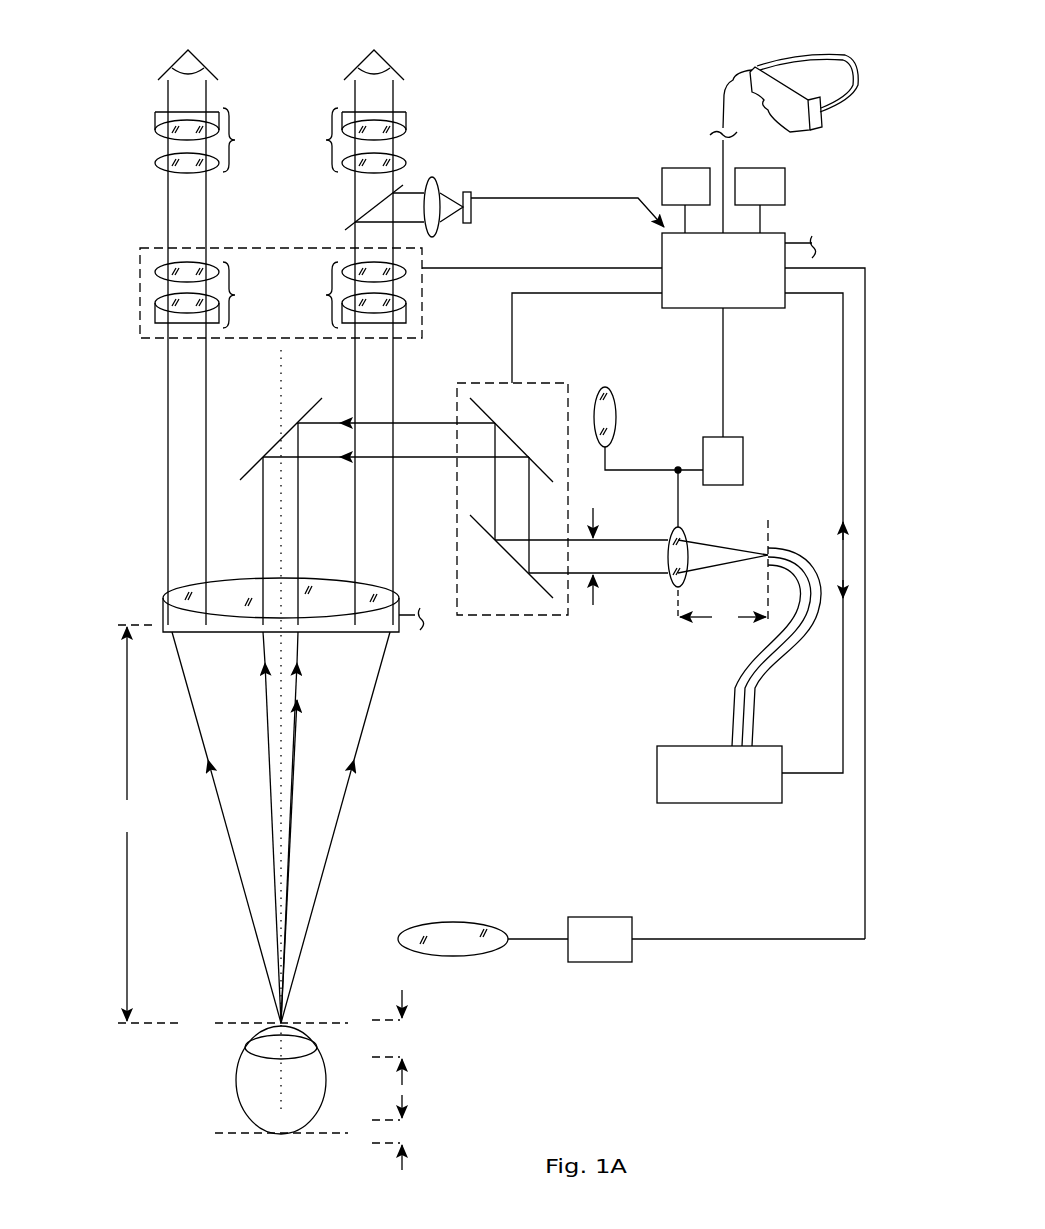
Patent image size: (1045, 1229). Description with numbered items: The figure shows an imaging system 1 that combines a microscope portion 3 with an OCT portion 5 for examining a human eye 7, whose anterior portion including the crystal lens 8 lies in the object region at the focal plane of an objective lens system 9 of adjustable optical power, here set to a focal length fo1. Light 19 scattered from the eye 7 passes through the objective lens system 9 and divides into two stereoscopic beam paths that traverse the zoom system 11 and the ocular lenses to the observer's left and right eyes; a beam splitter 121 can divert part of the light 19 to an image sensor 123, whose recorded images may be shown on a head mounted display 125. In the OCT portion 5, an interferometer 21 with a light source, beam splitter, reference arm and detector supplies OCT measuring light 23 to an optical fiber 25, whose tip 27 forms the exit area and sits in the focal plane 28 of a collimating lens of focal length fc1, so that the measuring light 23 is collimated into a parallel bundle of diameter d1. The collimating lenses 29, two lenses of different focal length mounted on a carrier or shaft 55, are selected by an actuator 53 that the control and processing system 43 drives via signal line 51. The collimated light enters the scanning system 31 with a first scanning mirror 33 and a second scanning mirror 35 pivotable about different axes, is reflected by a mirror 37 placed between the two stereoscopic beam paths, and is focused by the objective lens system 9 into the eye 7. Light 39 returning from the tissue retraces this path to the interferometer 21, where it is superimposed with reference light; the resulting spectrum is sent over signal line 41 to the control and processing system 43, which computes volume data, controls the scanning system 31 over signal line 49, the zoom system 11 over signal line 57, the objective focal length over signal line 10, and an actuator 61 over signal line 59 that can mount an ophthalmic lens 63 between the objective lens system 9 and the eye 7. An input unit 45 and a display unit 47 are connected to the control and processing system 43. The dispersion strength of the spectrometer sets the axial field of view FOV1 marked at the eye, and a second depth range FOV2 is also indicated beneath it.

The imaging system 1 is at (592, 96).
The microscope portion 3 is at (160, 505).
The OCT portion 5 is at (610, 702).
The human eye 7 is at (200, 1070).
The crystal lens 8 is at (306, 1047).
The objective lens system 9 is at (163, 612).
The signal line 10 is at (800, 243).
The zoom system 11 is at (142, 248).
The light 19 is at (206, 383).
The interferometer 21 is at (705, 803).
The OCT measuring light 23 is at (332, 418).
The optical fiber 25 is at (785, 665).
The tip 27 is at (765, 548).
The focal plane 28 is at (775, 525).
The collimating lenses 29 is at (665, 372).
The scanning system 31 is at (510, 615).
The first scanning mirror 33 is at (478, 530).
The second scanning mirror 35 is at (543, 468).
The mirror 37 is at (256, 463).
The light 39 is at (262, 662).
The signal line 41 is at (812, 773).
The control and processing system 43 is at (662, 248).
The input unit 45 is at (662, 180).
The display unit 47 is at (785, 180).
The signal line 49 is at (575, 293).
The signal line 51 is at (723, 345).
The actuator 53 is at (735, 437).
The carrier or shaft 55 is at (650, 494).
The signal line 57 is at (472, 268).
The signal line 59 is at (755, 939).
The actuator 61 is at (600, 917).
The ophthalmic lens 63 is at (458, 922).
The beam splitter 121 is at (352, 227).
The image sensor 123 is at (466, 192).
The head mounted display 125 is at (762, 62).
The cross sectional diameter d1 is at (596, 556).
The focal length fc1 is at (722, 612).
The focal length fo1 is at (145, 824).
The field of view FOV1 is at (417, 1037).
The second field of view FOV2 is at (417, 1132).